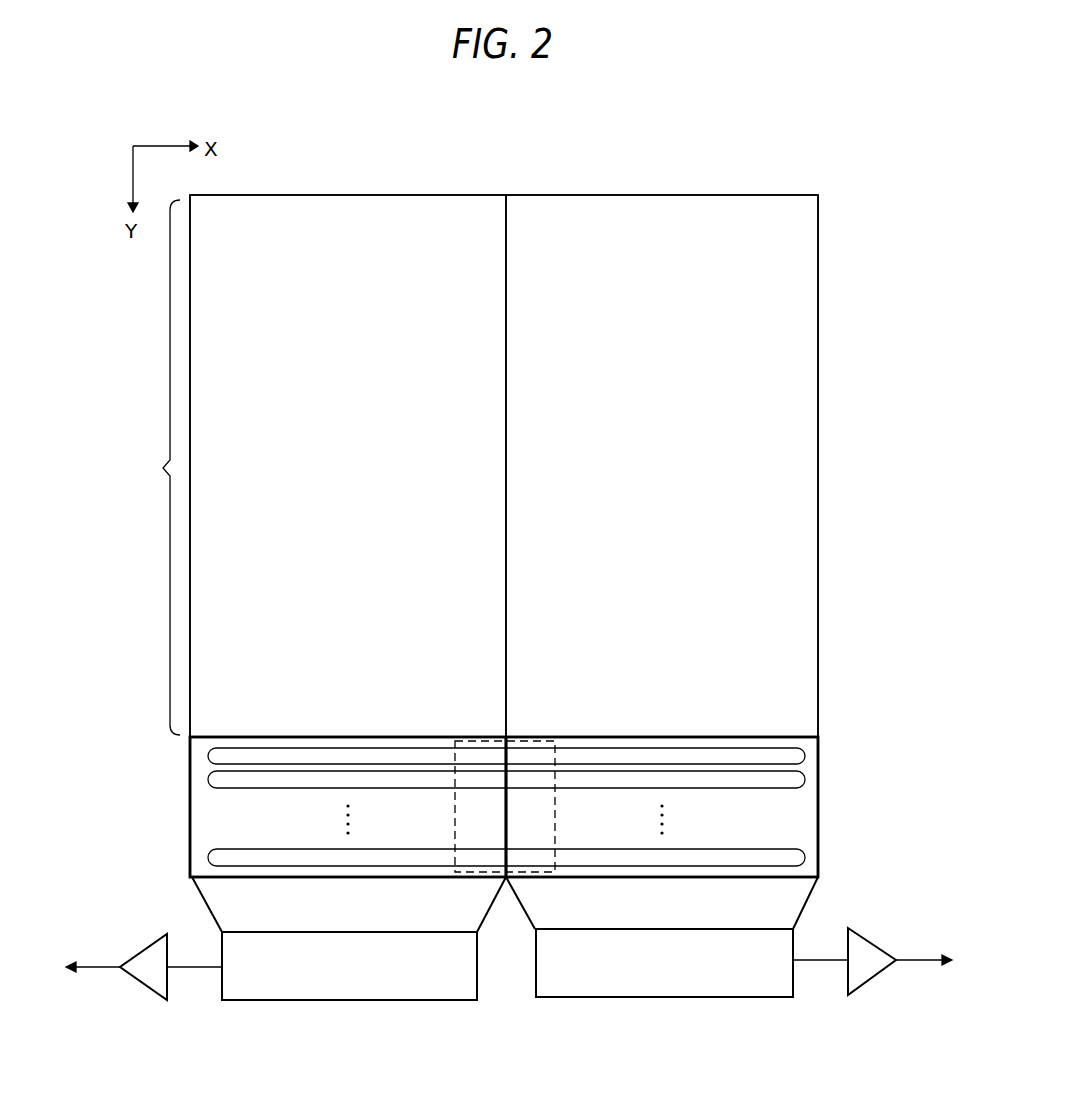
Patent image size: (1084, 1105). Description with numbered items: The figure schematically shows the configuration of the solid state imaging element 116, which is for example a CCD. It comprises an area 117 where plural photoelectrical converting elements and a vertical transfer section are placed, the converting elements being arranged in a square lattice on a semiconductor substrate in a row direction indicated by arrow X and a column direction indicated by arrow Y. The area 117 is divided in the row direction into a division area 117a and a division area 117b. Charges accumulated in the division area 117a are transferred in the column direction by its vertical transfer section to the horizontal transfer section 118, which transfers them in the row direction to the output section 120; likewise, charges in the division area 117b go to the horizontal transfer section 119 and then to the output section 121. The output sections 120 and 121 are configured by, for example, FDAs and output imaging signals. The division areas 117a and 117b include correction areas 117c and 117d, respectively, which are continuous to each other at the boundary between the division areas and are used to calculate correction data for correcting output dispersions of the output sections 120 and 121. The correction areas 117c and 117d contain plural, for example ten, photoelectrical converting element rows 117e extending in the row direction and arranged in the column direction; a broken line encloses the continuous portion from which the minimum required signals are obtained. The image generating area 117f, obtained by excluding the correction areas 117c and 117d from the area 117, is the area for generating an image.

The solid state imaging element 116 is at (850, 170).
The area 117 is at (820, 462).
The division area 117a is at (344, 211).
The division area 117b is at (658, 211).
The correction area 117c is at (202, 810).
The correction area 117d is at (808, 800).
The photoelectrical converting element rows 117e is at (805, 750).
The image generating area 117f is at (147, 467).
The horizontal transfer section 118 is at (351, 1002).
The horizontal transfer section 119 is at (666, 999).
The output section 120 is at (141, 948).
The output section 121 is at (873, 939).